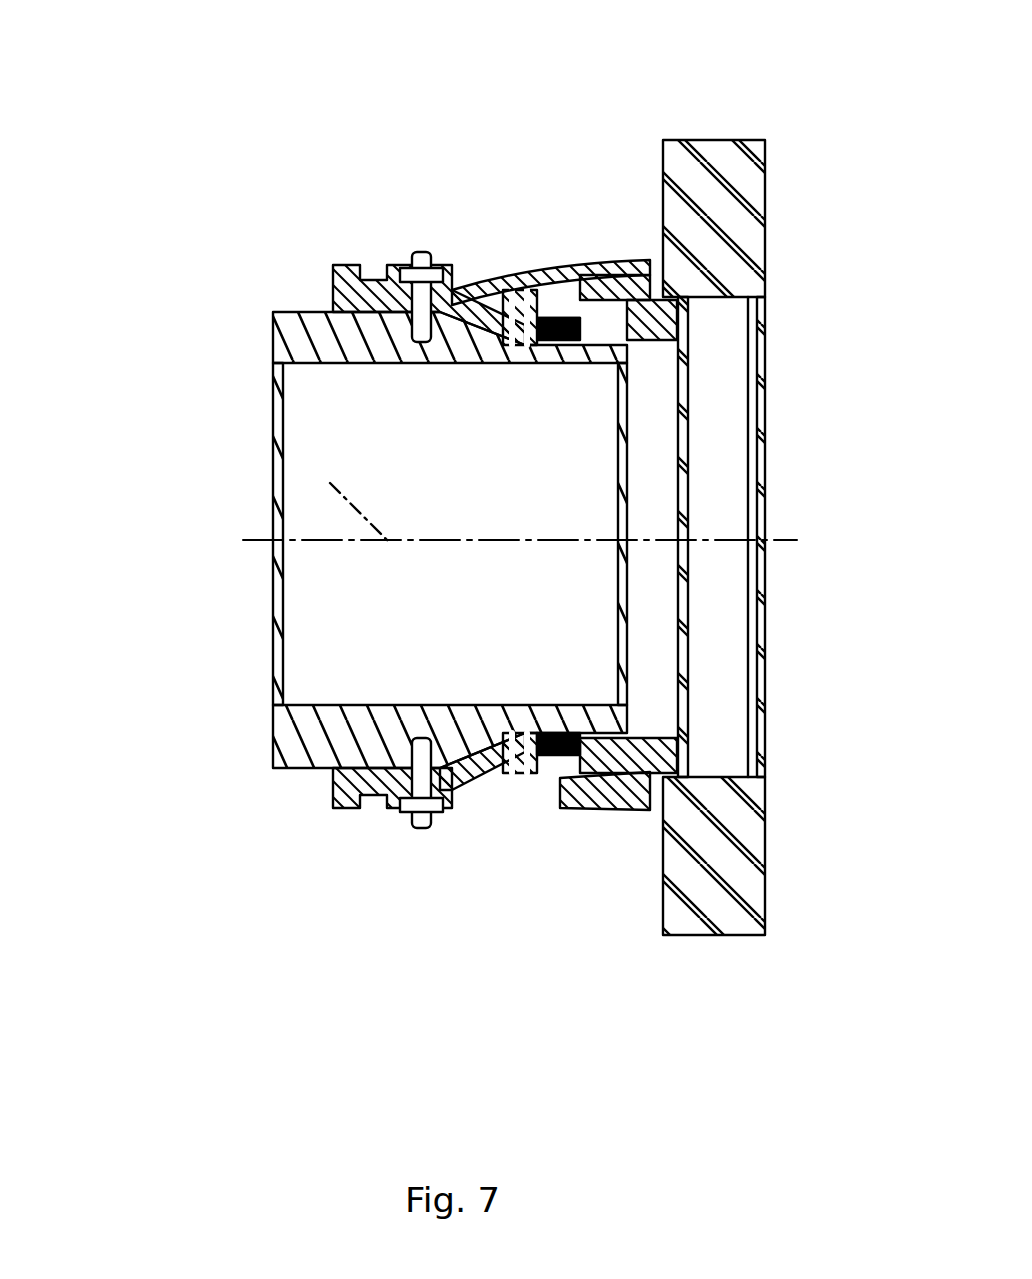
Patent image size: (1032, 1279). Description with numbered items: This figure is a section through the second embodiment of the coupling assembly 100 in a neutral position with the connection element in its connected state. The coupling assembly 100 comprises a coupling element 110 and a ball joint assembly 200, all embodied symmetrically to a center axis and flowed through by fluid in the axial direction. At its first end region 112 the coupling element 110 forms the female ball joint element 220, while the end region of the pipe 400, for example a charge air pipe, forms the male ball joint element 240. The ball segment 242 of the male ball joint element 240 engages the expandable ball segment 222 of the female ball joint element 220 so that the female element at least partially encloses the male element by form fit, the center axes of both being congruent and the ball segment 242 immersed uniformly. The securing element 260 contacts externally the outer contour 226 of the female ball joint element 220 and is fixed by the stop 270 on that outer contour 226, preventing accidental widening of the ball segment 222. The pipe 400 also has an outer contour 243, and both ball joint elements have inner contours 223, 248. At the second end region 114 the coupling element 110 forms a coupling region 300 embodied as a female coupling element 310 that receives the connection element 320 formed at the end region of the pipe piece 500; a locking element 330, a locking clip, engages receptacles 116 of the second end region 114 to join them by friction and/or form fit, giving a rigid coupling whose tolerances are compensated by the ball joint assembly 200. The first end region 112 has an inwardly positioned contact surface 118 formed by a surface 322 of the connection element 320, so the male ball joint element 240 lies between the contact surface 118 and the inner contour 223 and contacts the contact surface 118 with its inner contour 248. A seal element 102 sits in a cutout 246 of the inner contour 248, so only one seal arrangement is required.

The coupling assembly 100 is at (476, 533).
The coupling element 110 is at (393, 206).
The outer contour 226 is at (488, 274).
The surface 322 is at (539, 468).
The stop 270 is at (522, 292).
The contact surface 118 is at (548, 338).
The outer contour 243 is at (609, 288).
The pipe 400 is at (752, 168).
The inner contour 223 is at (642, 327).
The inner contour 248 is at (609, 346).
The seal element 102 is at (523, 390).
The cutout 246 is at (582, 346).
The pipe piece 500 is at (450, 468).
The connection element 320 is at (450, 468).
The second end region 114 is at (253, 828).
The coupling region 300 is at (253, 828).
The female coupling element 310 is at (345, 793).
The receptacles 116 is at (329, 845).
The locking element 330 is at (420, 800).
The first end region 112 is at (395, 870).
The female ball joint element 220 is at (395, 870).
The expandable ball segment 222 is at (500, 790).
The male ball joint element 240 is at (499, 831).
The ball segment 242 is at (545, 770).
The securing element 260 is at (592, 812).
The ball joint assembly 200 is at (641, 583).